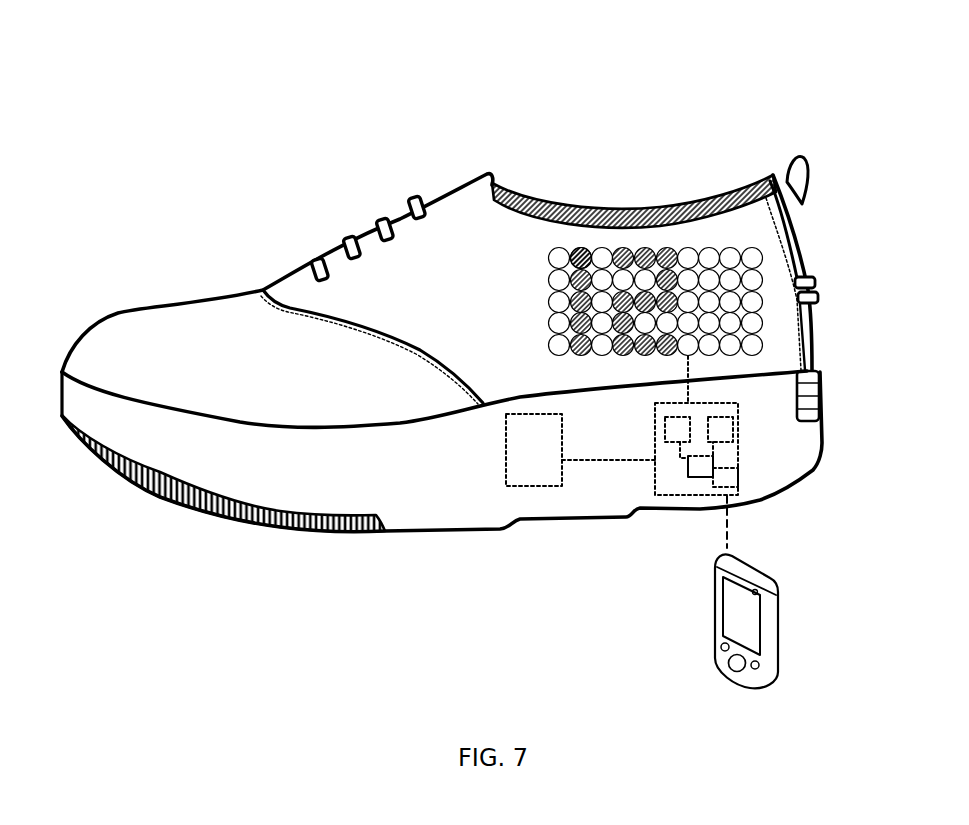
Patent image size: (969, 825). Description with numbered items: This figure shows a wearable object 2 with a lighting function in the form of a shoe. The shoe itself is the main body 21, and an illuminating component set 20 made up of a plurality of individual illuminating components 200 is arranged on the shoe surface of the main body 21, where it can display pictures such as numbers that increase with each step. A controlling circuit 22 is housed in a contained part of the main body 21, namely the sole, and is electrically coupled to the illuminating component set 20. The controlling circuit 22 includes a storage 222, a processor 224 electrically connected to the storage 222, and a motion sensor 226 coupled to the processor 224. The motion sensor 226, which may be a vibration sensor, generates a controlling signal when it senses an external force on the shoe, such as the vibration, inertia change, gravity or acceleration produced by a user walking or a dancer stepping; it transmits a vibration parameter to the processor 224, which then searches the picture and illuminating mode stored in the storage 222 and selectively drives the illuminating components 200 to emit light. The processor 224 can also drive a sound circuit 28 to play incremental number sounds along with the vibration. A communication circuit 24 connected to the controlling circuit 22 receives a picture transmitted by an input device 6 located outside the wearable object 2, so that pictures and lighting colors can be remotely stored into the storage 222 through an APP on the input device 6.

The wearable object 2 is at (444, 98).
The illuminating component set 20 is at (732, 240).
The illuminating component 200 is at (579, 247).
The main body 21 is at (292, 274).
The controlling circuit 22 is at (655, 485).
The storage 222 is at (665, 430).
The processor 224 is at (693, 478).
The motion sensor 226 is at (731, 437).
The communication circuit 24 is at (736, 482).
The sound circuit 28 is at (535, 486).
The input device 6 is at (781, 616).